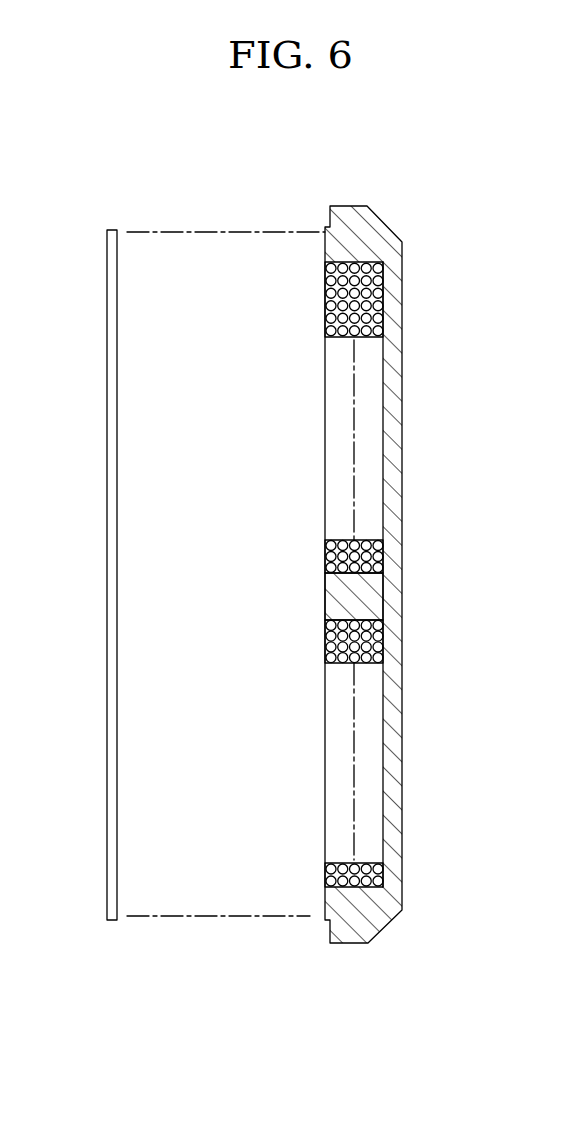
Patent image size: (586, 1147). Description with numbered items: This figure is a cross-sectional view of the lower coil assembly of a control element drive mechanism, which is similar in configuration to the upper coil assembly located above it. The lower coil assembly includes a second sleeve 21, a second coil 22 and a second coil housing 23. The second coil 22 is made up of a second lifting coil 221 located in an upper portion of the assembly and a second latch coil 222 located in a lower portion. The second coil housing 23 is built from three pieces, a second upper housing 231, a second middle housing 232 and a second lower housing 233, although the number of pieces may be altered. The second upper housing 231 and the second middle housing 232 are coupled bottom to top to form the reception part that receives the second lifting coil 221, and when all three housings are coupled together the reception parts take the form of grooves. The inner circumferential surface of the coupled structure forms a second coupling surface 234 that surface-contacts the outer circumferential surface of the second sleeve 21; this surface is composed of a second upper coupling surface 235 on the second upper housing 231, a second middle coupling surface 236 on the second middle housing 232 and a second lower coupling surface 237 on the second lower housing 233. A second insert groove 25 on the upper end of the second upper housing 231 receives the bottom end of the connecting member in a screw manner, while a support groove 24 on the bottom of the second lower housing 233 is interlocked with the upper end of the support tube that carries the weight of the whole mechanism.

The second sleeve 21 is at (107, 574).
The second coil 22 is at (493, 926).
The second lifting coil 221 is at (372, 515).
The second latch coil 222 is at (365, 843).
The second coil housing 23 is at (462, 574).
The second upper housing 231 is at (388, 350).
The second middle housing 232 is at (388, 592).
The second lower housing 233 is at (432, 779).
The second coupling surface 234 is at (281, 576).
The second upper coupling surface 235 is at (325, 257).
The second middle coupling surface 236 is at (325, 600).
The second lower coupling surface 237 is at (316, 886).
The support groove 24 is at (331, 941).
The second insert groove 25 is at (329, 219).